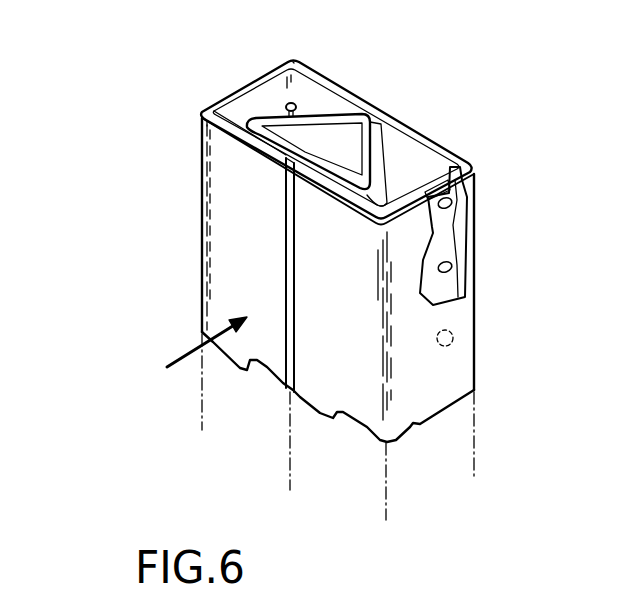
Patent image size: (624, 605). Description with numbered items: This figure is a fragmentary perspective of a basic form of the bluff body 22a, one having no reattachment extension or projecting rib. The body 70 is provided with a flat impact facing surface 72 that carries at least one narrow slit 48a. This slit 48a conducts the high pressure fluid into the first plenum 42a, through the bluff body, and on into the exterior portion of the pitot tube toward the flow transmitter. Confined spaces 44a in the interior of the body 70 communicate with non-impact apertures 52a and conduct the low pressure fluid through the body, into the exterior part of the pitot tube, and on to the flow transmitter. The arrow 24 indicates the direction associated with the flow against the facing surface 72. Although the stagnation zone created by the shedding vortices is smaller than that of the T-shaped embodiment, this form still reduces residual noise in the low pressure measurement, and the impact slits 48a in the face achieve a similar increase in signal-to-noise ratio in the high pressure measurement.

The bluff body 22a is at (162, 106).
The body 70 is at (256, 74).
The non-impact apertures 52a is at (288, 107).
The confined spaces 44a is at (297, 63).
The first plenum 42a is at (343, 142).
The flat impact facing surface 72 is at (262, 247).
The narrow slit 48a is at (290, 284).
The insertion direction arrow 24 is at (170, 362).